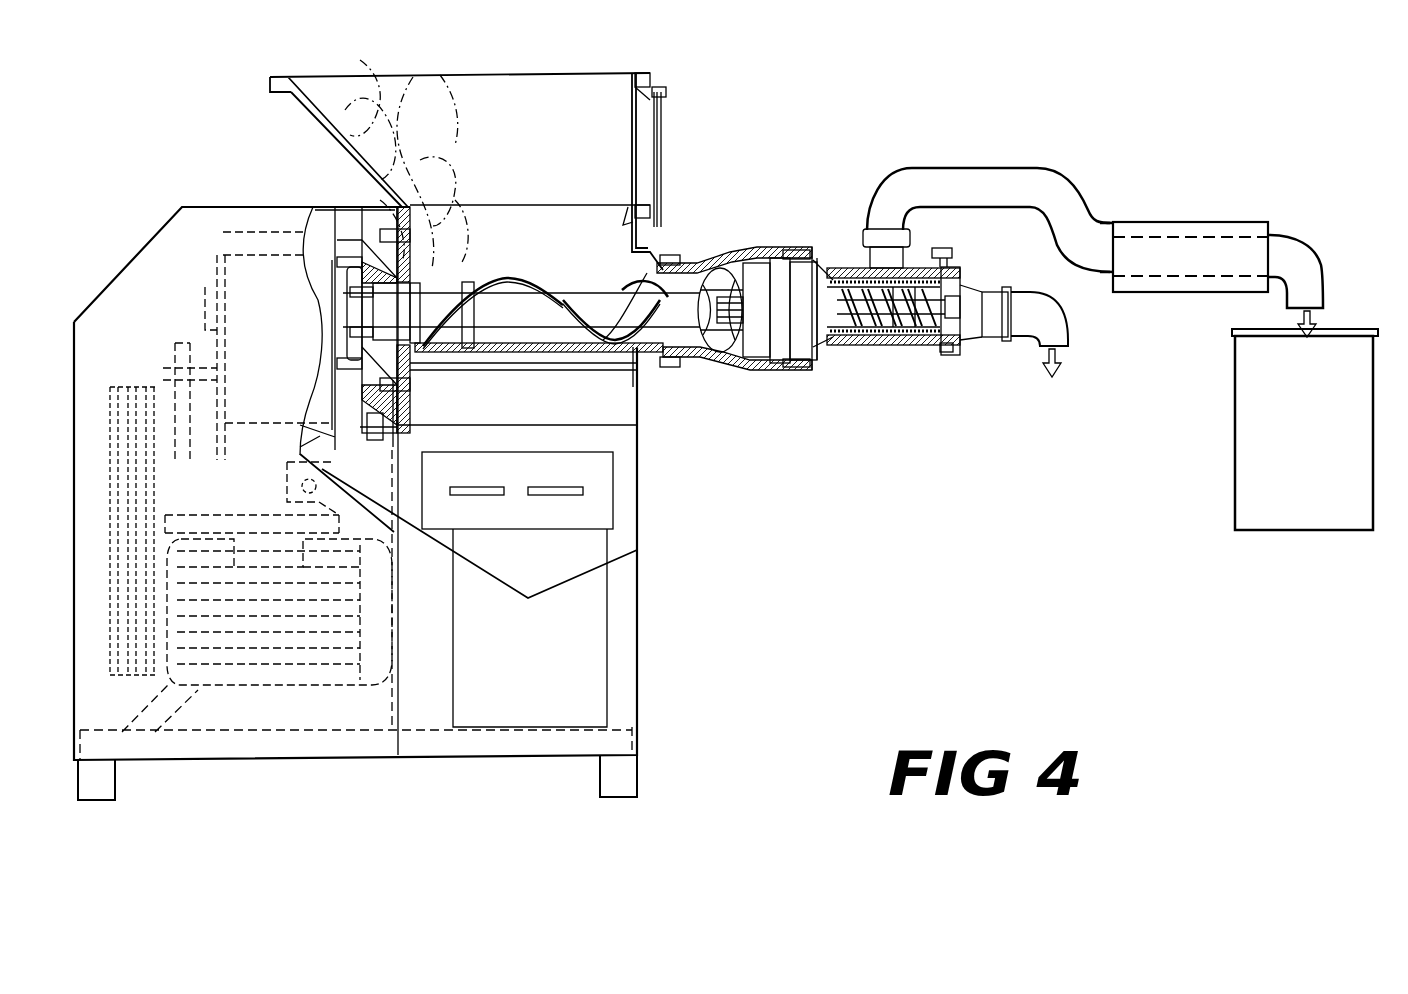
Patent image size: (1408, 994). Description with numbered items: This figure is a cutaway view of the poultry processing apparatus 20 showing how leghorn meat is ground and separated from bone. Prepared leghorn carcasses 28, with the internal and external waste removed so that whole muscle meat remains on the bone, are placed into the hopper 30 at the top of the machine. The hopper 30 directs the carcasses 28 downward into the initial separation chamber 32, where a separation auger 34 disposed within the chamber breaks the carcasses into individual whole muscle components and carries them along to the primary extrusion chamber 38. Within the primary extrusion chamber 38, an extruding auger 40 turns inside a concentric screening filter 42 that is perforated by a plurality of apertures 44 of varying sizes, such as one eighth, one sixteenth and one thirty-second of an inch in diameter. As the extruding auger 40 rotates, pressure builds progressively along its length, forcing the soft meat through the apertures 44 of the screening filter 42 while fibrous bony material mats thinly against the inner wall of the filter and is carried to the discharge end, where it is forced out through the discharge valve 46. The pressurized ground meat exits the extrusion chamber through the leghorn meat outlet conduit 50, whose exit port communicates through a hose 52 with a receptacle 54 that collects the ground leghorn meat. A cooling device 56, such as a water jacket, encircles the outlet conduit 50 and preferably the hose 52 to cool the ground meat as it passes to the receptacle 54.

The cooking apparatus 20 is at (191, 76).
The leghorn carcasses 28 is at (413, 77).
The hopper 30 is at (530, 100).
The initial separation chamber 32 is at (545, 338).
The separation auger 34 is at (647, 288).
The primary extrusion chamber 38 is at (843, 265).
The extruding auger 40 is at (825, 337).
The screening filter 42 is at (840, 337).
The apertures 44 is at (915, 352).
The discharge valve 46 is at (971, 319).
The leghorn meat outlet conduit 50 is at (986, 185).
The hose 52 is at (1093, 256).
The receptacle 54 is at (1255, 455).
The cooling device 56 is at (1190, 230).